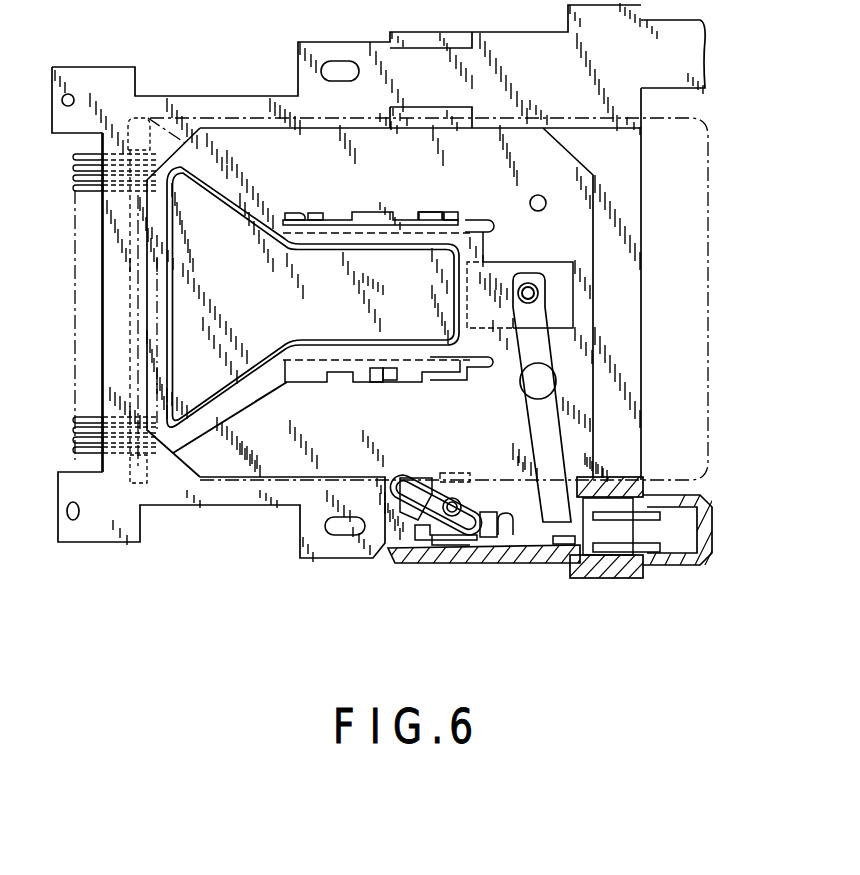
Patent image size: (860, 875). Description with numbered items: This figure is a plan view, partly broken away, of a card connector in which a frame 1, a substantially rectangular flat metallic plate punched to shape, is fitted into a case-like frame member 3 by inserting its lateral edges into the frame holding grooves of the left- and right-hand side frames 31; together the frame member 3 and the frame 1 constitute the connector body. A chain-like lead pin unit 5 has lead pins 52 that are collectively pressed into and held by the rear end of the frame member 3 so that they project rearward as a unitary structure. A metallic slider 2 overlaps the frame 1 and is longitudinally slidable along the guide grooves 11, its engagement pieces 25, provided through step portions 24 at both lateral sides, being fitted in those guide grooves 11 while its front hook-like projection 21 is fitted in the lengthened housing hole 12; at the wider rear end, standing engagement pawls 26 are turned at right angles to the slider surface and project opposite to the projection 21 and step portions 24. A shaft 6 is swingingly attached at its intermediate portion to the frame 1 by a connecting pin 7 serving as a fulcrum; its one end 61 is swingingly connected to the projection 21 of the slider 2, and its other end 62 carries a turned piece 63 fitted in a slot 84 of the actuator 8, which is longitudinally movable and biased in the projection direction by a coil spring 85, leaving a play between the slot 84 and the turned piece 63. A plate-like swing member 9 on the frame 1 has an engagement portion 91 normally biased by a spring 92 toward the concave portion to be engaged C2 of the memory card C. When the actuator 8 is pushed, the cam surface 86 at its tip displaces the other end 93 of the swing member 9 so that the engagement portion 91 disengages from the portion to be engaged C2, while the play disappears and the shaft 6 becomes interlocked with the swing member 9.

The frame 1 is at (593, 432).
The slider 2 is at (232, 377).
The frame member 3 is at (192, 505).
The chain-like lead pin unit 5 is at (75, 323).
The shaft 6 is at (525, 412).
The connecting pin 7 is at (547, 383).
The actuator 8 is at (697, 55).
The swing member 9 is at (425, 503).
The guide groove 11 is at (373, 212).
The housing hole 12 is at (568, 292).
The hook-like projection 21 is at (548, 272).
The step portion 24 is at (313, 213).
The engagement piece 25 is at (297, 212).
The engagement pawl 26 is at (128, 133).
The side frame 31 is at (250, 96).
The lead pin 52 is at (80, 432).
The one end of shaft 61 is at (513, 300).
The other end of shaft 62 is at (527, 525).
The turned piece 63 is at (553, 533).
The slot 84 is at (577, 570).
The coil spring 85 is at (625, 578).
The cam surface 86 is at (508, 560).
The engagement portion 91 is at (410, 472).
The spring 92 is at (462, 490).
The other end of swing member 93 is at (490, 517).
The memory card C is at (708, 245).
The concave portion to be engaged C2 is at (445, 472).